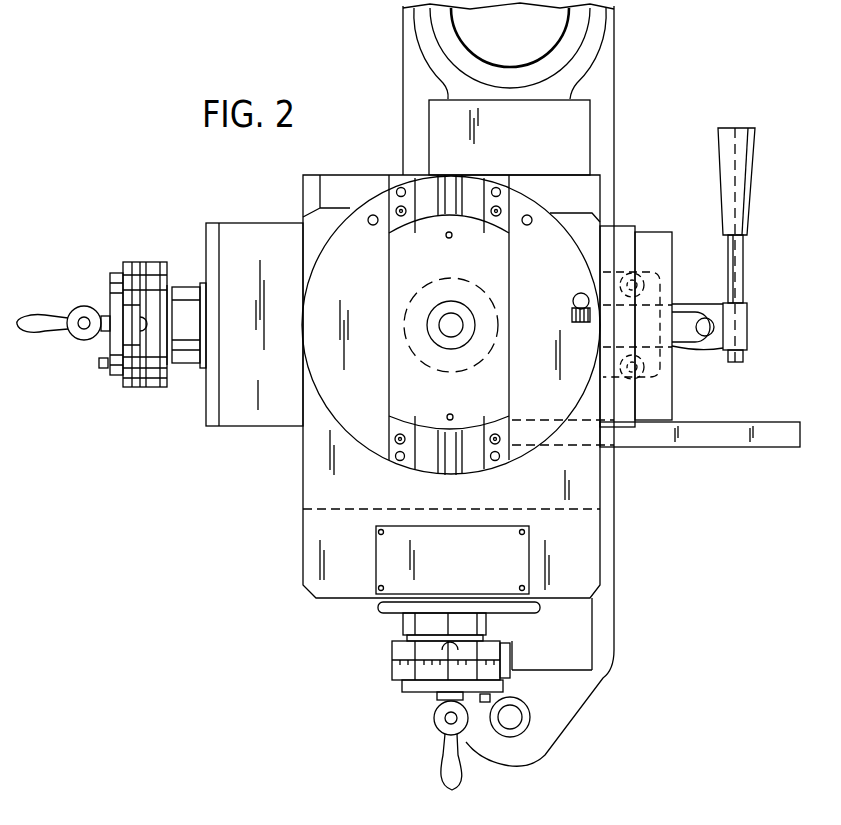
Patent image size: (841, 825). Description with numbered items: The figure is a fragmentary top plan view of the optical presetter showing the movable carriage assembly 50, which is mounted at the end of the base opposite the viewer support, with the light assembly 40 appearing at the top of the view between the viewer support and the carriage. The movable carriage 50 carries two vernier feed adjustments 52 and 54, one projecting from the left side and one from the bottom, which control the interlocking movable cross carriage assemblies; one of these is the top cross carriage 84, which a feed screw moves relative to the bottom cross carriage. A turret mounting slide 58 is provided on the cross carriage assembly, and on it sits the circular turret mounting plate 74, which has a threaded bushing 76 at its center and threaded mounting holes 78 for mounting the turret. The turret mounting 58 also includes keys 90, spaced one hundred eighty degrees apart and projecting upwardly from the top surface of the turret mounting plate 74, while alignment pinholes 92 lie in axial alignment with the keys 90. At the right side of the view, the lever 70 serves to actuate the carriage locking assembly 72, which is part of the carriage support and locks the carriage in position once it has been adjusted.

The light assembly 40 is at (590, 28).
The movable carriage assembly 50 is at (163, 485).
The vernier feed adjustment 52 is at (136, 262).
The vernier feed adjustment 54 is at (400, 673).
The turret mounting slide 58 is at (322, 404).
The lever 70 is at (743, 292).
The carriage locking assembly 72 is at (672, 304).
The turret mounting plate 74 is at (540, 222).
The threaded bushing 76 is at (455, 318).
The threaded mounting holes 78 is at (373, 214).
The top cross carriage 84 is at (590, 578).
The keys 90 is at (452, 212).
The alignment pinholes 92 is at (446, 236).